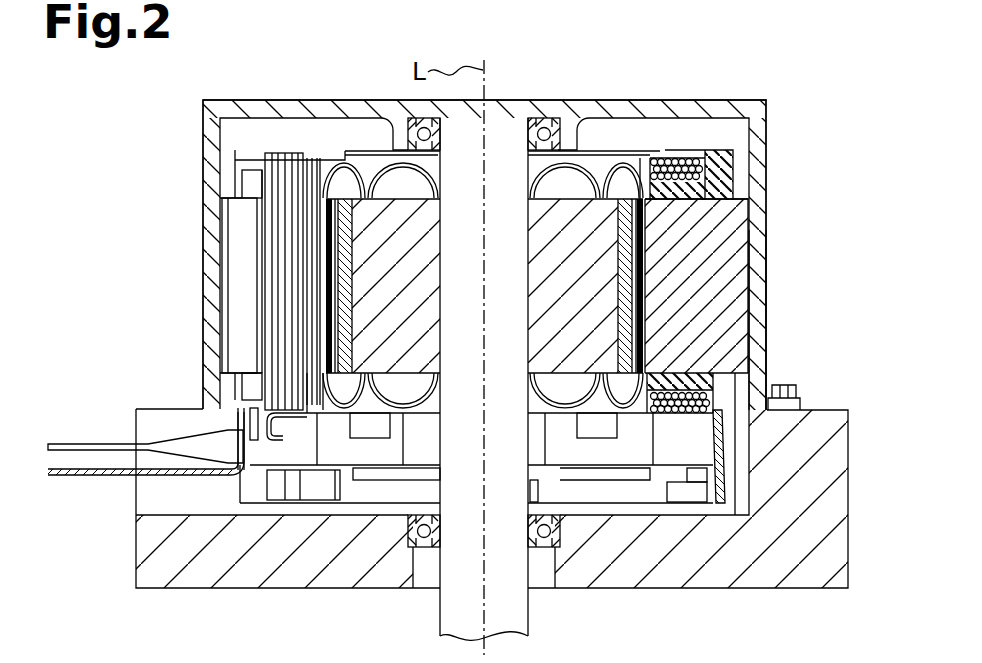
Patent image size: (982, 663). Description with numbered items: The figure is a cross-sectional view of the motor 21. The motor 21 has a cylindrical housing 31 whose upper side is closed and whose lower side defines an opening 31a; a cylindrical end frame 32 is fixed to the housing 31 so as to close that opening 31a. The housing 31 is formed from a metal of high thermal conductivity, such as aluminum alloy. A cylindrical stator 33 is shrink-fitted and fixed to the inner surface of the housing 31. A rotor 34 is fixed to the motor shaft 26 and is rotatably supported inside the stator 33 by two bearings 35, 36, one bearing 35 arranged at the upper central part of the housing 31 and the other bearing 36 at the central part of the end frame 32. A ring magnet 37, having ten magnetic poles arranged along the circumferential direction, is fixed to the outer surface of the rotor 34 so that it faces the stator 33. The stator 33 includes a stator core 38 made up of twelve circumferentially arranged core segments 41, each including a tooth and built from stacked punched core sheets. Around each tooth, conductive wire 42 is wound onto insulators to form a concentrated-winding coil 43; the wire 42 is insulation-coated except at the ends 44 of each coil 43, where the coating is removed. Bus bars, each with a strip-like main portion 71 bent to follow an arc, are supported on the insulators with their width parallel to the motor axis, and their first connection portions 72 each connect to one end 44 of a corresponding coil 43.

The motor 21 is at (788, 95).
The motor shaft 26 is at (530, 605).
The housing 31 is at (747, 100).
The opening 31a is at (778, 410).
The end frame 32 is at (829, 410).
The stator 33 is at (748, 199).
The rotor 34 is at (567, 197).
The bearing 35 is at (541, 118).
The bearing 36 is at (553, 517).
The ring magnet 37 is at (342, 197).
The stator core 38 is at (740, 265).
The core segment 41 is at (757, 297).
The conductive wire 42 is at (688, 160).
The coil 43 is at (275, 152).
The end of coil 44 is at (271, 444).
The main portion 71 is at (637, 457).
The first connection portion 72 is at (266, 488).